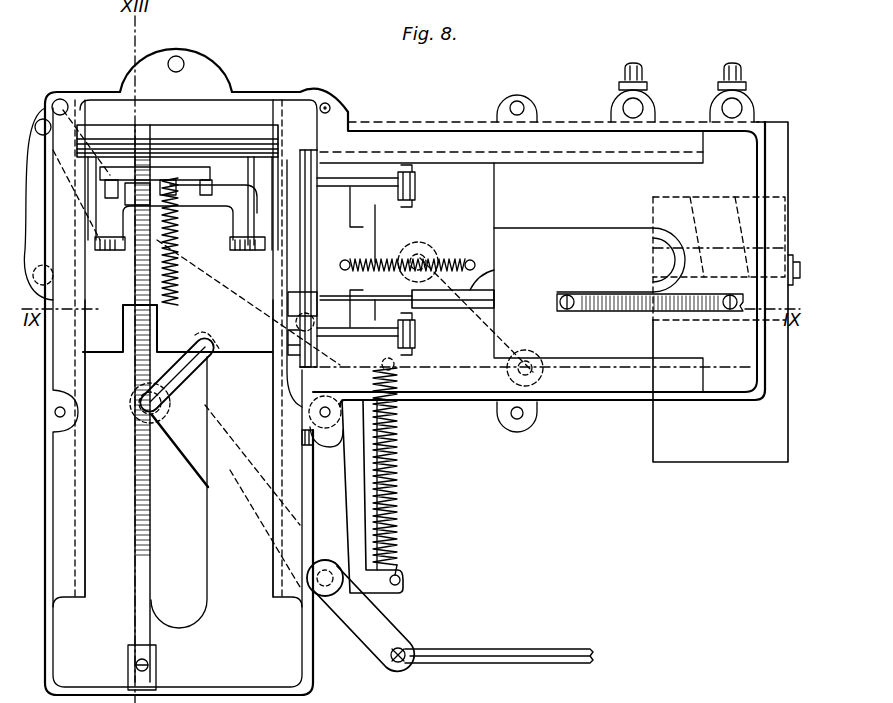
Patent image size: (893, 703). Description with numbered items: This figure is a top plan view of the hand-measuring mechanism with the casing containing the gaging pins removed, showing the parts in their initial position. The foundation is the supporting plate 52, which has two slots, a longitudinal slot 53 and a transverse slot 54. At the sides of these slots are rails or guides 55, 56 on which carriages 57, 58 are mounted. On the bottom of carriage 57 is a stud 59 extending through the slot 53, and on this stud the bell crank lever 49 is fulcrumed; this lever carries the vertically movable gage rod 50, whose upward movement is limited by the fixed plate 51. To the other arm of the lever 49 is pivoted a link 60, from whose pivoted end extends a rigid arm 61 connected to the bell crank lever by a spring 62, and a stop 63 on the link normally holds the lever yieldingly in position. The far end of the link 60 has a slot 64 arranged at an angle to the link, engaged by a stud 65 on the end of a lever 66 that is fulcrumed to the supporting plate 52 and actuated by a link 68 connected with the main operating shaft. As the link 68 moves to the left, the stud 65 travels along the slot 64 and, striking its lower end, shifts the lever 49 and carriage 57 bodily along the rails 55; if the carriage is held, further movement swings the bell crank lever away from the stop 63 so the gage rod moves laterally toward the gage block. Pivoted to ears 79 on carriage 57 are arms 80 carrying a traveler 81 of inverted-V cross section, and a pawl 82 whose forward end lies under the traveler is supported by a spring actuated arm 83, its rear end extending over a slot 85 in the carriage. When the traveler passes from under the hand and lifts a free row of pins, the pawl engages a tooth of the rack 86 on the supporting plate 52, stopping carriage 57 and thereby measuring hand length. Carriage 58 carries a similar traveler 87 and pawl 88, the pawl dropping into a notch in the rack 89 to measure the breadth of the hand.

The bell crank lever 49 is at (518, 342).
The gage rod 50 is at (538, 374).
The fixed plate 51 is at (726, 292).
The supporting plate 52 is at (394, 372).
The slot 53 is at (639, 258).
The slot 54 is at (179, 492).
The rails or guides 55 is at (542, 166).
The rails or guides 56 is at (87, 440).
The carriage 57 is at (494, 192).
The carriage 58 is at (104, 350).
The stud 59 is at (430, 256).
The link 60 is at (212, 362).
The rigid arm 61 is at (352, 494).
The spring 62 is at (398, 462).
The stop 63 is at (300, 322).
The slot 64 is at (182, 384).
The stud 65 is at (160, 412).
The lever 66 is at (360, 615).
The link 68 is at (482, 647).
The ears 79 is at (415, 195).
The arms 80 is at (386, 180).
The traveler 81 is at (317, 204).
The pawl 82 is at (494, 300).
The spring actuated arm 83 is at (300, 296).
The slot 85 is at (493, 272).
The rack 86 is at (626, 294).
The traveler 87 is at (205, 130).
The pawl 88 is at (160, 286).
The rack 89 is at (150, 512).